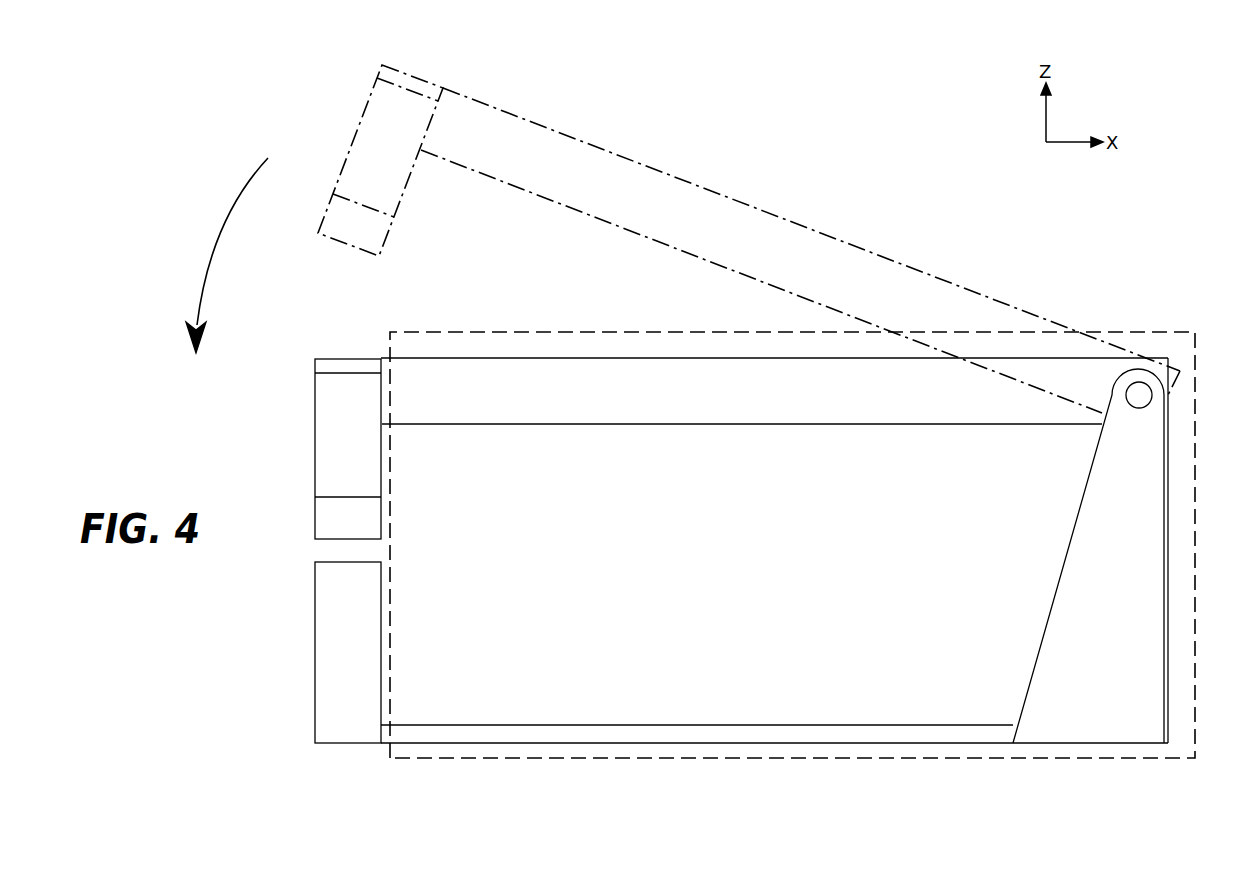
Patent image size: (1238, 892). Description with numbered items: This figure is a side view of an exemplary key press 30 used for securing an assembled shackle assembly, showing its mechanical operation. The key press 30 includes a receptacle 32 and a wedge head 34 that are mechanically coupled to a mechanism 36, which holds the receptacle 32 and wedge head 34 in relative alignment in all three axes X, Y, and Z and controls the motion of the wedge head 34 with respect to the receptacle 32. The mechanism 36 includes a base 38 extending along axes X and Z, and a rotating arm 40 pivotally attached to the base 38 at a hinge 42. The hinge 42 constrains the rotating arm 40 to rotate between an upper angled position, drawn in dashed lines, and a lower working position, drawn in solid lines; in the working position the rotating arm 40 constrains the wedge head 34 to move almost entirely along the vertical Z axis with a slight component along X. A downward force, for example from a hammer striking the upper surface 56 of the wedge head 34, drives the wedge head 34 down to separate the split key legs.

The key press 30 is at (1097, 245).
The receptacle 32 is at (320, 610).
The wedge head 34 is at (360, 160).
The mechanism 36 is at (575, 332).
The base 38 is at (818, 732).
The rotating arm 40 is at (902, 390).
The hinge 42 is at (1140, 395).
The upper surface 56 is at (323, 357).